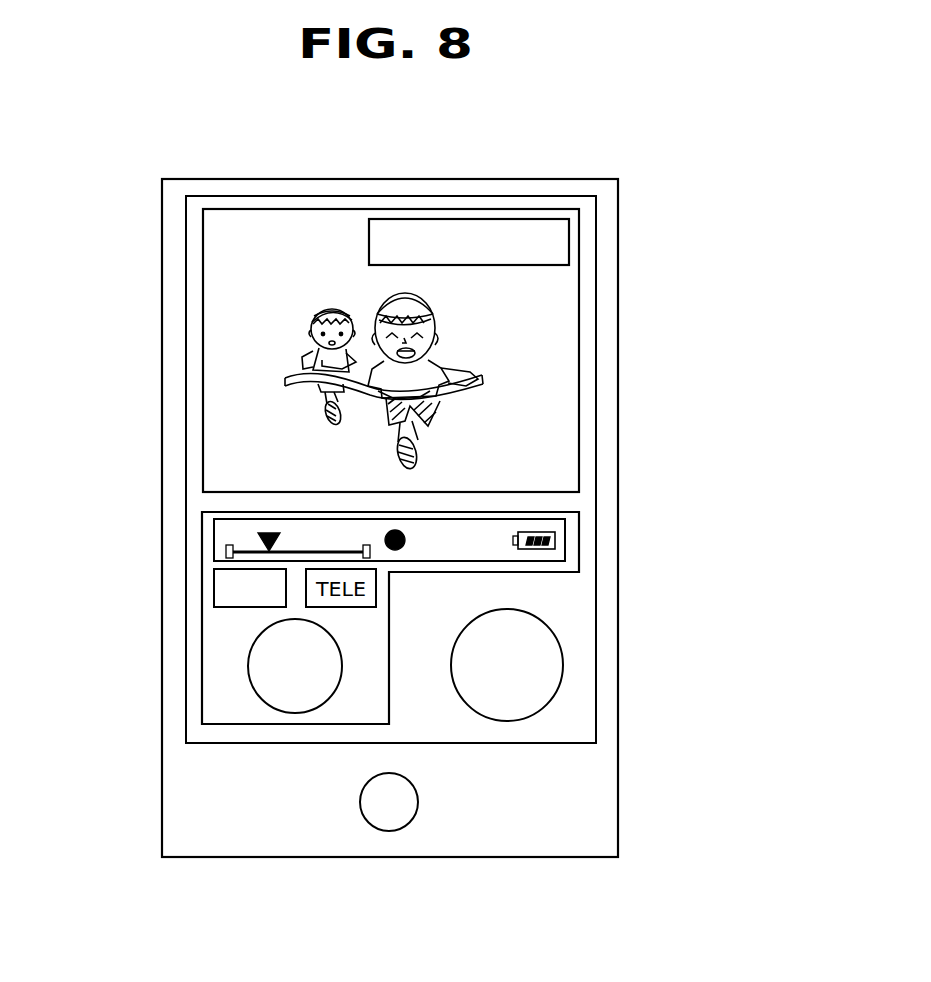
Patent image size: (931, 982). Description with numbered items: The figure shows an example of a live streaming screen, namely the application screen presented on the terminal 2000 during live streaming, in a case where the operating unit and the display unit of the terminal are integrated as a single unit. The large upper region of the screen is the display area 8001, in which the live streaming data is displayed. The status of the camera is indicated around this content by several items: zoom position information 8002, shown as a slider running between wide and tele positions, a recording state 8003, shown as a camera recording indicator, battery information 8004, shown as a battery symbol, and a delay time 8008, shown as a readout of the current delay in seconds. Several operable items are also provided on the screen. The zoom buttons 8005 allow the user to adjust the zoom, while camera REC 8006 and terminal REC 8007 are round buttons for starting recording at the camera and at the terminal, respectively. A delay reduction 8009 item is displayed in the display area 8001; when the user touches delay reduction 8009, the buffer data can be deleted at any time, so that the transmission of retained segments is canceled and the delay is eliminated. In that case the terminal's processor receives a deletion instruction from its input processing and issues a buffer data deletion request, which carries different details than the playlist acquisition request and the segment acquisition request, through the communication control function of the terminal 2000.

The terminal 2000 is at (544, 178).
The display area 8001 is at (562, 300).
The zoom position information 8002 is at (266, 532).
The recording state 8003 is at (460, 528).
The battery information 8004 is at (557, 534).
The zoom buttons 8005 is at (214, 588).
The camera REC 8006 is at (249, 664).
The terminal REC 8007 is at (563, 664).
The delay time 8008 is at (270, 222).
The delay reduction 8009 is at (396, 220).